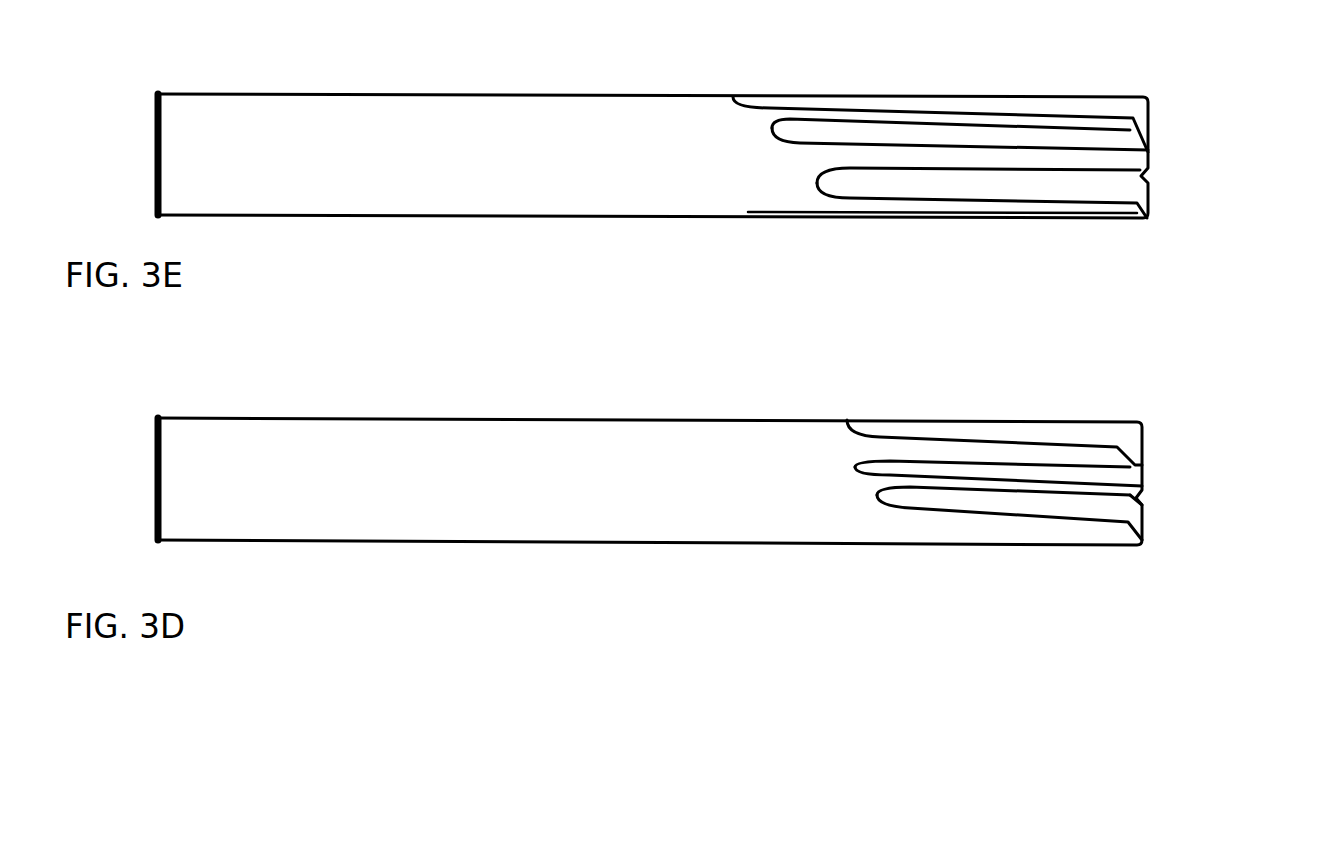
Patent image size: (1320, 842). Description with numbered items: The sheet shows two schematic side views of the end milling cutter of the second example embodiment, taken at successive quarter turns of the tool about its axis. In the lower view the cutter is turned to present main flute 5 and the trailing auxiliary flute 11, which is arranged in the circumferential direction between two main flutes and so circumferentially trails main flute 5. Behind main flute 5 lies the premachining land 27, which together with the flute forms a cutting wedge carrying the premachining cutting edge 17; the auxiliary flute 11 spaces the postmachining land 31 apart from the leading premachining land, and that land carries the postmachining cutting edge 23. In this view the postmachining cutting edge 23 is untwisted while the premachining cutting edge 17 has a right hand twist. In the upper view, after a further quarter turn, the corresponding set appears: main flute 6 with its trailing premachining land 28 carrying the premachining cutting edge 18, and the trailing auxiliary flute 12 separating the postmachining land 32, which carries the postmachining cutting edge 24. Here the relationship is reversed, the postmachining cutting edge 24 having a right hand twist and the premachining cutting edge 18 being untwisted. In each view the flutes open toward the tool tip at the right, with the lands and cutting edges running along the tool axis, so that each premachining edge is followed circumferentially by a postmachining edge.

In FIG. 3E, the postmachining land 32 is at (1040, 123).
In FIG. 3E, the postmachining cutting edge 24 is at (1017, 128).
In FIG. 3E, the auxiliary flute 12 is at (836, 149).
In FIG. 3E, the premachining cutting edge 18 is at (1078, 170).
In FIG. 3E, the main flute 6 is at (900, 203).
In FIG. 3E, the premachining land 28 is at (1102, 162).
In FIG. 3D, the postmachining land 31 is at (1087, 455).
In FIG. 3D, the postmachining cutting edge 23 is at (1067, 467).
In FIG. 3D, the auxiliary flute 11 is at (934, 487).
In FIG. 3D, the premachining cutting edge 17 is at (1078, 488).
In FIG. 3D, the main flute 5 is at (965, 520).
In FIG. 3D, the premachining land 27 is at (1120, 488).